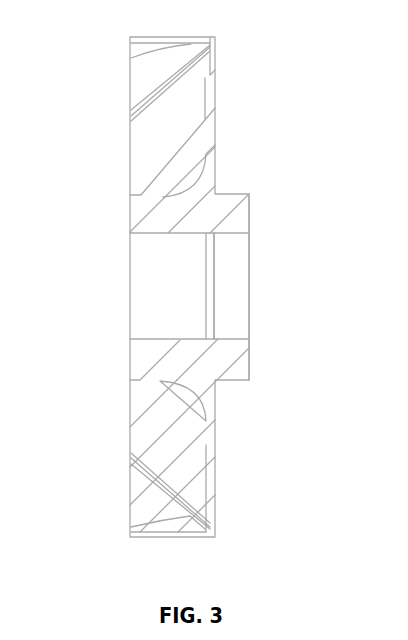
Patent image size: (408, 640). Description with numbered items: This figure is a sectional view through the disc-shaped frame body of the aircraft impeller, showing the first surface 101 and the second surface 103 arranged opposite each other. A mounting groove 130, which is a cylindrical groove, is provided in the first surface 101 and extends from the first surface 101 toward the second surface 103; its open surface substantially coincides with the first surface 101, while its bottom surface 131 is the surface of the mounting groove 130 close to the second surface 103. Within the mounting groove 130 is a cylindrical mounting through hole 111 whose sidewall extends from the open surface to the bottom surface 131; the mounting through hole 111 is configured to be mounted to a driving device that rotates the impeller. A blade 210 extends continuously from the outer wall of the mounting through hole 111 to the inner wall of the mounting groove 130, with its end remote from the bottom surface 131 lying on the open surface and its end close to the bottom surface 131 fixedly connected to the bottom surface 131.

The first surface 101 is at (130, 302).
The mounting through hole 111 is at (230, 293).
The mounting groove 130 is at (163, 57).
The blade 210 is at (143, 102).
The bottom surface 131 is at (207, 100).
The second surface 103 is at (215, 467).